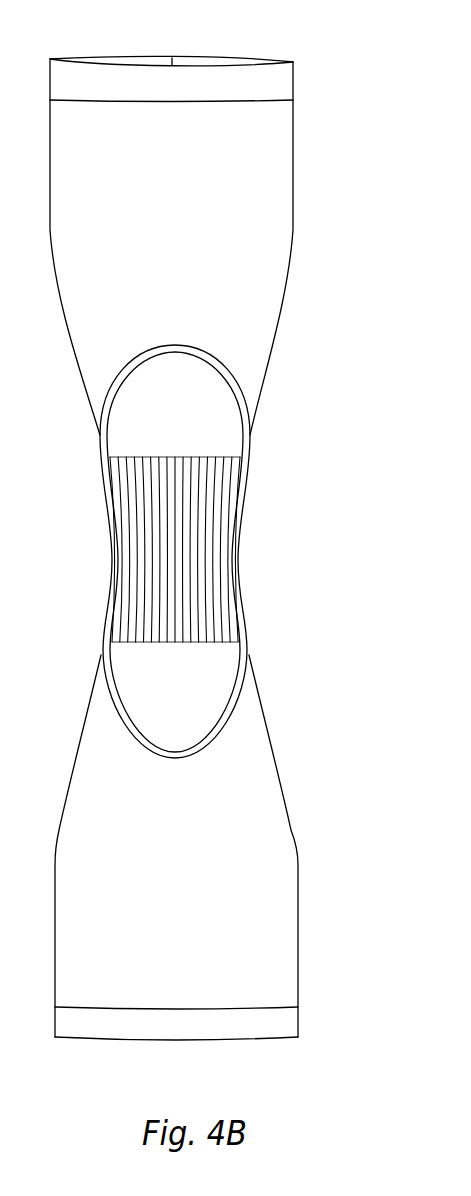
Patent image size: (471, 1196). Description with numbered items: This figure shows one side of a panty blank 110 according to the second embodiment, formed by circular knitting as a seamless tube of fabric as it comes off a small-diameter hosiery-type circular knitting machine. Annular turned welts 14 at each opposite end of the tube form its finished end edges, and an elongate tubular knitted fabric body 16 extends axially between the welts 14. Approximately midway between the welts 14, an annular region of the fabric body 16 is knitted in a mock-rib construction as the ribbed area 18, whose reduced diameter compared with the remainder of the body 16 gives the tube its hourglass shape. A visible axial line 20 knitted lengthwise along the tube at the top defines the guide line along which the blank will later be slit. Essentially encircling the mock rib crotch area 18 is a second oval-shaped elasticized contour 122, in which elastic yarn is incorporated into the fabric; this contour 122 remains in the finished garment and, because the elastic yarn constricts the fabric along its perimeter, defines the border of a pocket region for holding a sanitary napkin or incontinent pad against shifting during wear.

The annular turned welt 14 is at (257, 82).
The tubular knitted fabric body 16 is at (230, 245).
The mock-rib ribbed area 18 is at (207, 527).
The visible axial line 20 is at (137, 57).
The panty blank 110 is at (296, 494).
The second oval-shaped elasticized contour 122 is at (137, 360).